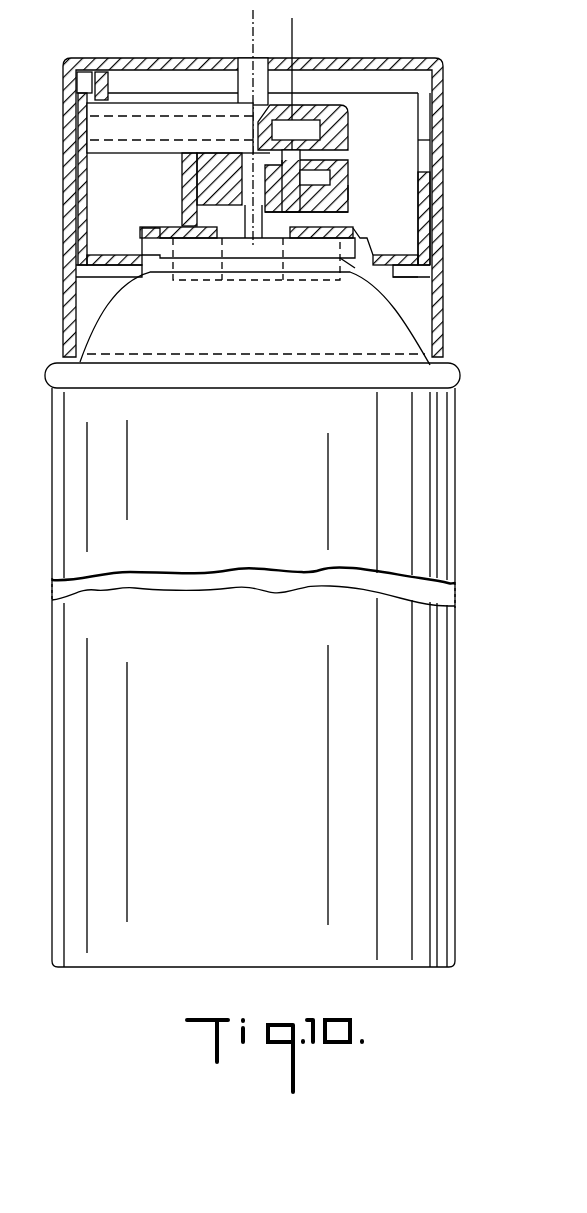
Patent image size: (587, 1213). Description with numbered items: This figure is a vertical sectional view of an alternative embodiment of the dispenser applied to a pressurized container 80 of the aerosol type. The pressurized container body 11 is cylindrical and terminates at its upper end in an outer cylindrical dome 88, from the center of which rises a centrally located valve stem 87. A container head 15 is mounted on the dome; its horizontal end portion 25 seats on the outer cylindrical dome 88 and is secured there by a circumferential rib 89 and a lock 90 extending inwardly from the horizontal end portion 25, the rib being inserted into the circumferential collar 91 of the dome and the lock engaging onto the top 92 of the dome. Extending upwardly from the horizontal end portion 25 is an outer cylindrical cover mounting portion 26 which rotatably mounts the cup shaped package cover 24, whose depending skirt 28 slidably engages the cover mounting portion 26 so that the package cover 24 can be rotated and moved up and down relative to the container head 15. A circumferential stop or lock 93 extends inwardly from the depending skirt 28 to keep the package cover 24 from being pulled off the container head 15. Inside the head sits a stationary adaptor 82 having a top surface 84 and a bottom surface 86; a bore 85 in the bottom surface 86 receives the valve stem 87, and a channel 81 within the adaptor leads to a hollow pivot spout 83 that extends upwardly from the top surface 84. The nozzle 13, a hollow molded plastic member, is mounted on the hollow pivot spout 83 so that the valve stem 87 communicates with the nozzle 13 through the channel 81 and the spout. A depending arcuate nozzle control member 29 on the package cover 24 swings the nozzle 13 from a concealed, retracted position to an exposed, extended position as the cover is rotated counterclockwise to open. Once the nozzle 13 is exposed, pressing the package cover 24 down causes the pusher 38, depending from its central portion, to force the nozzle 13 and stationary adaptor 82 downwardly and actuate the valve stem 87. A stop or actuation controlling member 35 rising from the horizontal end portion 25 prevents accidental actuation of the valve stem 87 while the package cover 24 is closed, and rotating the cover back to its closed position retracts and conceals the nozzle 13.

The container body 11 is at (272, 447).
The nozzle 13 is at (118, 158).
The container head 15 is at (425, 222).
The package cover 24 is at (444, 112).
The horizontal end portion 25 is at (444, 258).
The outer cylindrical cover mounting portion 26 is at (434, 200).
The depending skirt 28 is at (437, 206).
The depending arcuate nozzle control member 29 is at (115, 85).
The stop or actuation controlling member 35 is at (182, 192).
The pusher 38 is at (238, 80).
The pressurized container 80 is at (44, 727).
The channel 81 is at (300, 178).
The stationary adaptor 82 is at (358, 196).
The hollow pivot spout 83 is at (340, 140).
The top surface 84 is at (348, 162).
The bore 85 is at (348, 202).
The bottom surface 86 is at (345, 218).
The valve stem 87 is at (248, 248).
The outer cylindrical dome 88 is at (330, 343).
The circumferential rib 89 is at (362, 270).
The lock 90 is at (370, 236).
The circumferential collar 91 is at (335, 275).
The top 92 is at (283, 262).
The circumferential stop or lock 93 is at (413, 282).